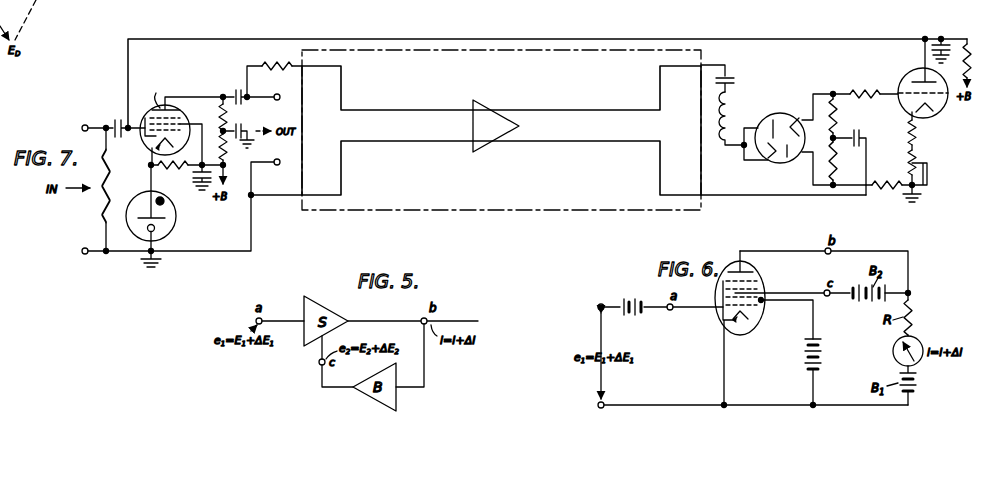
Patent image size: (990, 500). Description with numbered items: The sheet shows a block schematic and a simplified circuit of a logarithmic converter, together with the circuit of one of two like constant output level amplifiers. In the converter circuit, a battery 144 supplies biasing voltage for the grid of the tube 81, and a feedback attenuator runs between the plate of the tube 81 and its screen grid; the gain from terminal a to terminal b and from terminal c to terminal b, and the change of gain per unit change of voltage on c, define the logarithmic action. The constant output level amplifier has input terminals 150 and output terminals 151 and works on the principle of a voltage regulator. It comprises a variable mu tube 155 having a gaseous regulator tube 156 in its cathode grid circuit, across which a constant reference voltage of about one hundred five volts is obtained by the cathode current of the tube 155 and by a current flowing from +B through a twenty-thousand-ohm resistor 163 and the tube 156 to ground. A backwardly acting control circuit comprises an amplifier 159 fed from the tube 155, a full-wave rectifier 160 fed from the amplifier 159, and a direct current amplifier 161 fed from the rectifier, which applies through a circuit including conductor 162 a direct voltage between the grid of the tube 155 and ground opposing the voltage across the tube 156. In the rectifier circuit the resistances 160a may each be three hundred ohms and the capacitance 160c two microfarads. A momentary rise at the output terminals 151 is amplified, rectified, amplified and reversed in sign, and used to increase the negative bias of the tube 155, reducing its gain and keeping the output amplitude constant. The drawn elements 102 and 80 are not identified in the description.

In FIG. 7, the input terminals 150 is at (84, 125).
In FIG. 7, the output terminals 151 is at (274, 120).
In FIG. 7, the variable mu tube 155 is at (143, 141).
In FIG. 7, the gaseous regulator tube 156 is at (176, 231).
In FIG. 7, the resistor 163 is at (182, 172).
In FIG. 7, the amplifier 159 is at (684, 50).
In FIG. 7, the conductor 162 is at (786, 39).
In FIG. 7, the full-wave rectifier 160 is at (763, 167).
In FIG. 7, the resistances 160a is at (841, 116).
In FIG. 7, the capacitance 160c is at (859, 134).
In FIG. 7, the direct current amplifier 161 is at (905, 76).
In FIG. 6, the battery 144 is at (629, 296).
In FIG. 6, the tube 81 is at (766, 272).
In FIG. 6, the battery 102 is at (801, 348).
In FIG. 6, the common conductor 80 is at (778, 397).